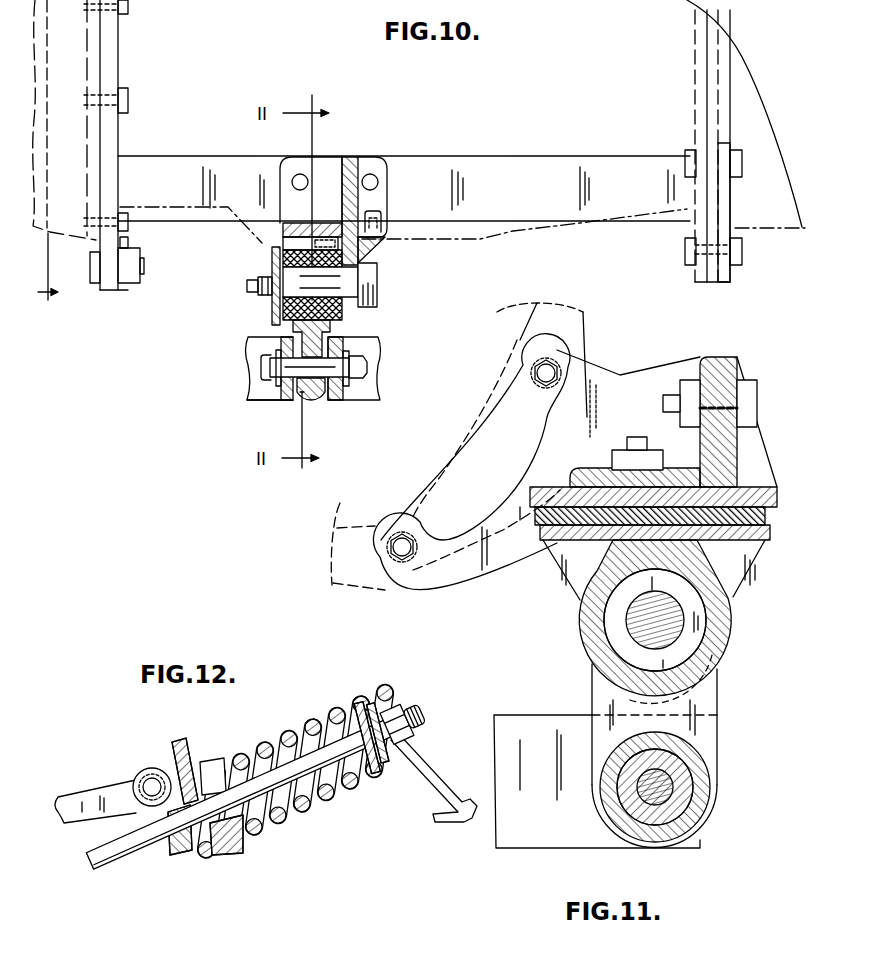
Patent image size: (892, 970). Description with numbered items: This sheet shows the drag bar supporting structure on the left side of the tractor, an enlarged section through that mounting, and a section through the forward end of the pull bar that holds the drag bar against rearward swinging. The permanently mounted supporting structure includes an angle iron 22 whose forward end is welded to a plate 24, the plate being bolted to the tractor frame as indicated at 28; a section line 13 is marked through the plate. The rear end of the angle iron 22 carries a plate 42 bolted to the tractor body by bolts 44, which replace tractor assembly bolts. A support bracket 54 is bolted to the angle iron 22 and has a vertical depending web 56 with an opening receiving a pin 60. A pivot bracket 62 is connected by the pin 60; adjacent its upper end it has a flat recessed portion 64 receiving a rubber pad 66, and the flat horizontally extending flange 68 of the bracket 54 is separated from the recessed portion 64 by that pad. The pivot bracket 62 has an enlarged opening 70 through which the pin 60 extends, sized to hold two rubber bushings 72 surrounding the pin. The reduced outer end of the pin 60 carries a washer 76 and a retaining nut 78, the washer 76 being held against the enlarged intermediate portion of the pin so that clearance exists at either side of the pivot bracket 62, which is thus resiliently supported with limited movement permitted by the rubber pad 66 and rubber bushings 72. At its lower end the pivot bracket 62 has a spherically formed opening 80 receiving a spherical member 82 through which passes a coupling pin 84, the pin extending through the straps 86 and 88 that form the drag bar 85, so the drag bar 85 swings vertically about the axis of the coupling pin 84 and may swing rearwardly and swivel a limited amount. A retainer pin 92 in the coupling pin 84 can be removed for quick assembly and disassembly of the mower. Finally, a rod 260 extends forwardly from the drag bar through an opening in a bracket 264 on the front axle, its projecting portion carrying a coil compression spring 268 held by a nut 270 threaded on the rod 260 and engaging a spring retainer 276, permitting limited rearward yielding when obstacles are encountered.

In FIG. 10, the section line 13- 13 is at (40, 266).
In FIG. 10, the angle iron 22 is at (560, 153).
In FIG. 11, the angle iron 22 is at (697, 445).
In FIG. 10, the plate 24 is at (115, 62).
In FIG. 10, the bolts 28 is at (128, 97).
In FIG. 10, the plate 42 is at (727, 208).
In FIG. 11, the plate 42 is at (463, 462).
In FIG. 10, the bolts 44 is at (740, 242).
In FIG. 11, the bolts 44 is at (471, 462).
In FIG. 10, the support bracket 54 is at (388, 187).
In FIG. 11, the support bracket 54 is at (740, 450).
In FIG. 10, the vertical depending web 56 is at (370, 310).
In FIG. 10, the pin 60 is at (378, 288).
In FIG. 11, the pin 60 is at (630, 614).
In FIG. 10, the pivot bracket 62 is at (312, 394).
In FIG. 11, the pivot bracket 62 is at (718, 705).
In FIG. 11, the flat recessed portion 64 is at (553, 553).
In FIG. 11, the rubber pad 66 is at (537, 512).
In FIG. 11, the flat horizontally extending flange 68 is at (543, 487).
In FIG. 10, the enlarged opening 70 is at (338, 323).
In FIG. 10, the rubber bushings 72 is at (278, 313).
In FIG. 11, the rubber bushings 72 is at (632, 650).
In FIG. 10, the washer 76 is at (272, 250).
In FIG. 10, the retaining nut 78 is at (258, 298).
In FIG. 10, the spherically formed opening 80 is at (303, 402).
In FIG. 10, the spherical member 82 is at (297, 397).
In FIG. 11, the spherical member 82 is at (683, 792).
In FIG. 10, the coupling pin 84 is at (368, 363).
In FIG. 11, the coupling pin 84 is at (685, 762).
In FIG. 10, the drag bar 85 is at (247, 400).
In FIG. 10, the strap 86 is at (353, 396).
In FIG. 11, the strap 86 is at (545, 846).
In FIG. 10, the strap 88 is at (247, 365).
In FIG. 10, the retainer pin 92 is at (348, 392).
In FIG. 12, the rod 260 is at (122, 858).
In FIG. 12, the bracket 264 is at (182, 752).
In FIG. 12, the coil compression spring 268 is at (300, 805).
In FIG. 12, the nut 270 is at (396, 708).
In FIG. 12, the spring retainer 276 is at (375, 703).